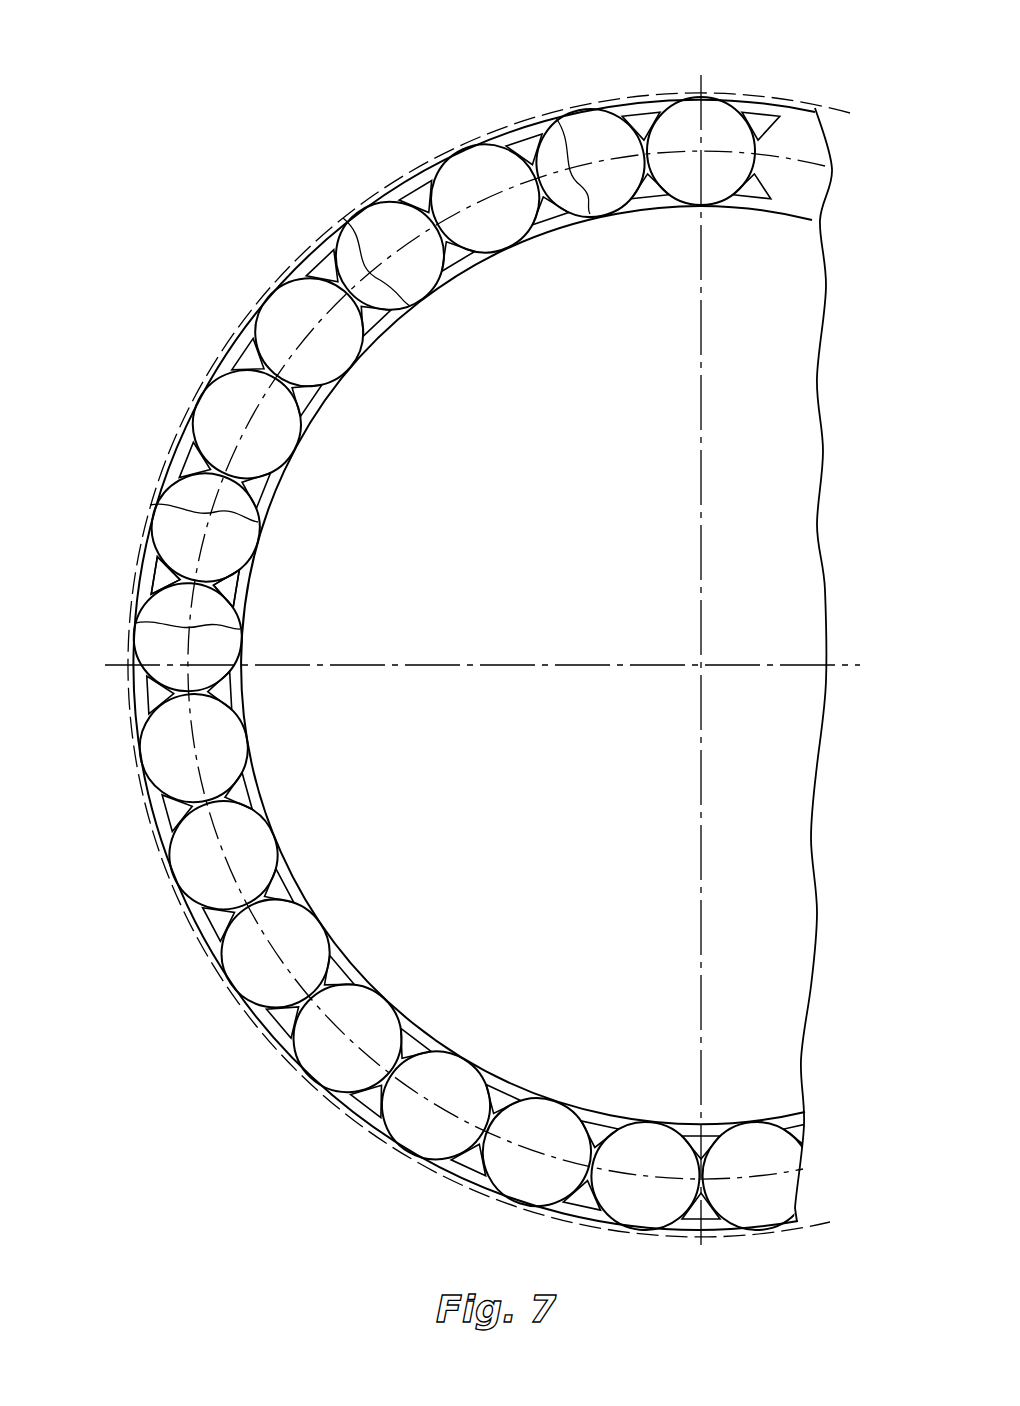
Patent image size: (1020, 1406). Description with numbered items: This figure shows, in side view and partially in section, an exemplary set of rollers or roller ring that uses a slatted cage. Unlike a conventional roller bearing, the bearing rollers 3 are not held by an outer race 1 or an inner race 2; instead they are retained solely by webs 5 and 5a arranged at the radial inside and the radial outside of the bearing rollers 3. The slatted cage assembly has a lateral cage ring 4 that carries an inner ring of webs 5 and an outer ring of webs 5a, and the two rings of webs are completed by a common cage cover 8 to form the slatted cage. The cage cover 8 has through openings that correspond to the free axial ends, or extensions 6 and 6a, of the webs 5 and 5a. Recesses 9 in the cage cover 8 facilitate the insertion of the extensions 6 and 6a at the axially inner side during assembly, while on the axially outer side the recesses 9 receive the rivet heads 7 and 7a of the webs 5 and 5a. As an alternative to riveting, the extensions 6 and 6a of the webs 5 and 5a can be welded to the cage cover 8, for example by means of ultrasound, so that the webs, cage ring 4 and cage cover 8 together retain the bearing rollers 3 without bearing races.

The outer race 1 is at (755, 105).
The inner race 2 is at (780, 490).
The bearing roller 3 is at (280, 310).
The lateral cage ring 4 is at (185, 486).
The web 5 is at (237, 583).
The web 5a is at (146, 571).
The extension 6 is at (228, 593).
The extension 6a is at (155, 580).
The rivet head 7 is at (230, 690).
The rivet head 7a is at (150, 692).
The cage cover 8 is at (630, 88).
The recess 9 is at (210, 928).